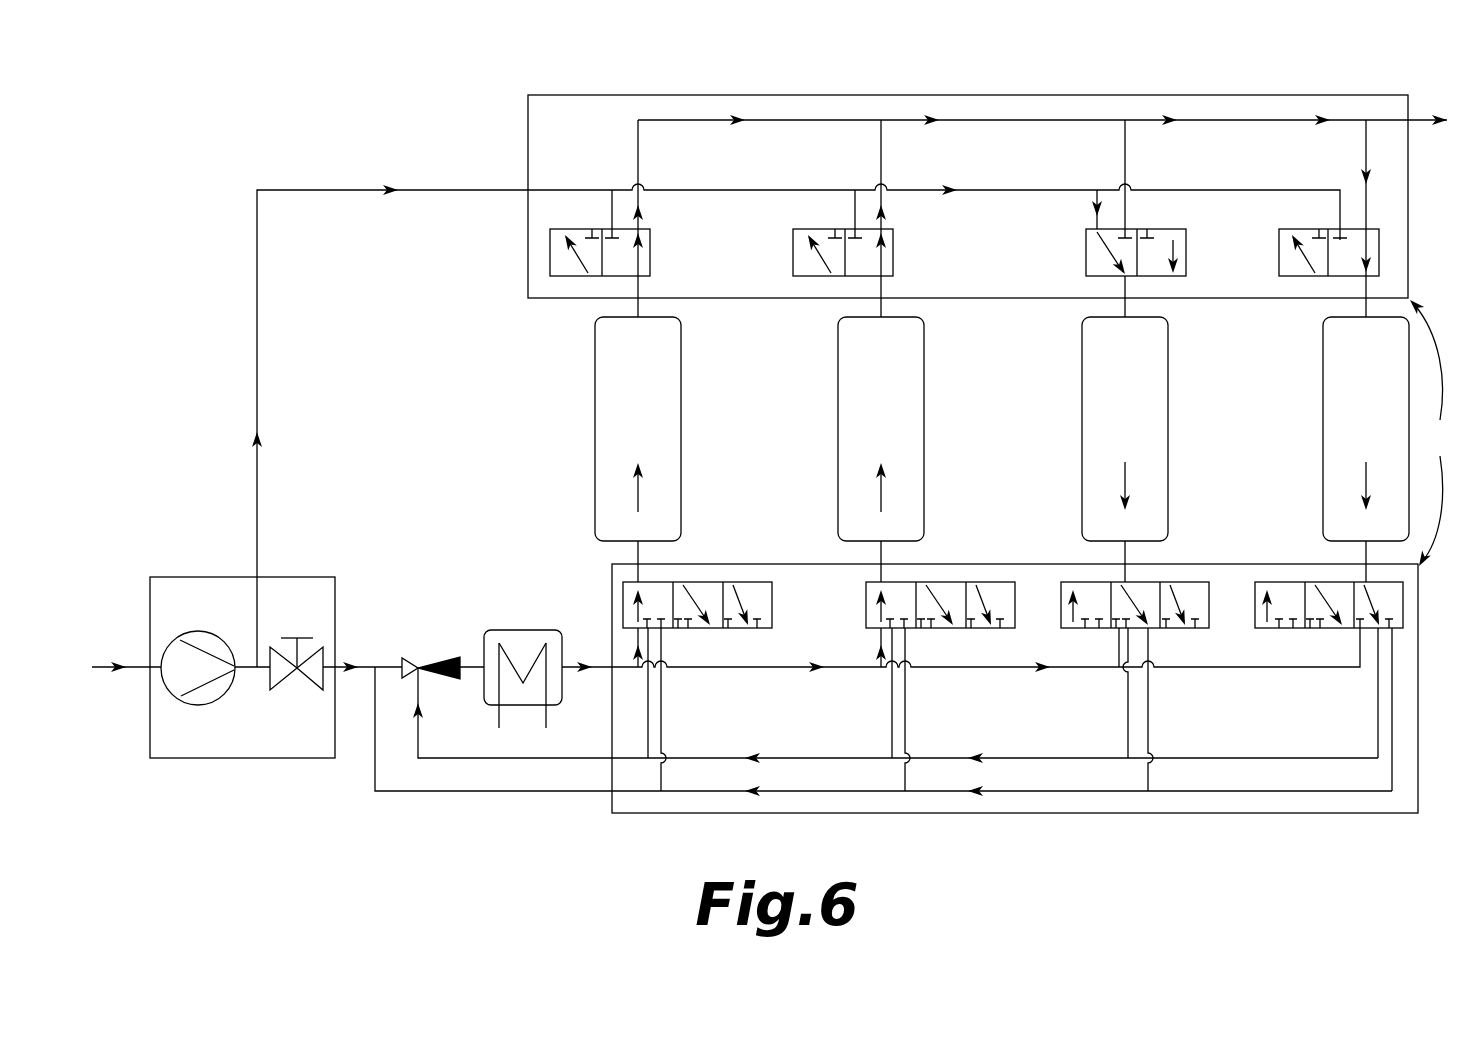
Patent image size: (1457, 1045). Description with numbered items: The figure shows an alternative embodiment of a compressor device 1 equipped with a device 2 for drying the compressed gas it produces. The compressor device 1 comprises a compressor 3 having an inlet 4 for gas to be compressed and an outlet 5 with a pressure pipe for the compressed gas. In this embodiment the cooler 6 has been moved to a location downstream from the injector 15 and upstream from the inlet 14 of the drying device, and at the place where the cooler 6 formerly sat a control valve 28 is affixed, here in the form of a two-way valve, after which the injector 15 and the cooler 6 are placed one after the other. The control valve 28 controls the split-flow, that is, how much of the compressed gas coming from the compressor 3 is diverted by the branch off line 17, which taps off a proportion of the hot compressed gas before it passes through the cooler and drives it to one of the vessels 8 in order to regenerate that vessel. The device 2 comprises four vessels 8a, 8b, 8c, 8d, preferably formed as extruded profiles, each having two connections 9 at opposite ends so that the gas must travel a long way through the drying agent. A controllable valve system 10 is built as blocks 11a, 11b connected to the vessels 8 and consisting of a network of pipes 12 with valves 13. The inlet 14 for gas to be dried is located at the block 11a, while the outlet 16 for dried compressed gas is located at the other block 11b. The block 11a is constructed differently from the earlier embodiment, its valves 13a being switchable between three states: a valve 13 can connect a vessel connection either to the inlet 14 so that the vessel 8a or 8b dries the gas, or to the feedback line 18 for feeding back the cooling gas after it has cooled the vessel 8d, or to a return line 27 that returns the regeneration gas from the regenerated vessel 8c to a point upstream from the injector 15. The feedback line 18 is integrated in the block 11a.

The compressor device 1 is at (158, 138).
The device for drying compressed gas 2 is at (1418, 826).
The compressor 3 is at (200, 633).
The inlet 4 is at (103, 667).
The outlet 5 is at (265, 655).
The cooler 6 is at (486, 632).
The vessels 8 is at (530, 440).
The vessel 8a is at (610, 388).
The vessel 8b is at (850, 388).
The vessel 8c is at (1093, 395).
The vessel 8d is at (1333, 388).
The connections 9 is at (634, 317).
The controllable valve system 10 is at (1431, 432).
The block 11a is at (613, 813).
The block 11b is at (528, 112).
The pipes 12 is at (1000, 190).
The valves 13 is at (812, 229).
The valves 13a is at (703, 582).
The inlet 14 is at (612, 667).
The injector 15 is at (418, 658).
The outlet 16 is at (1420, 118).
The branch off line 17 is at (257, 330).
The feedback line 18 is at (936, 760).
The return line 27 is at (1043, 813).
The control valve 28 is at (312, 672).